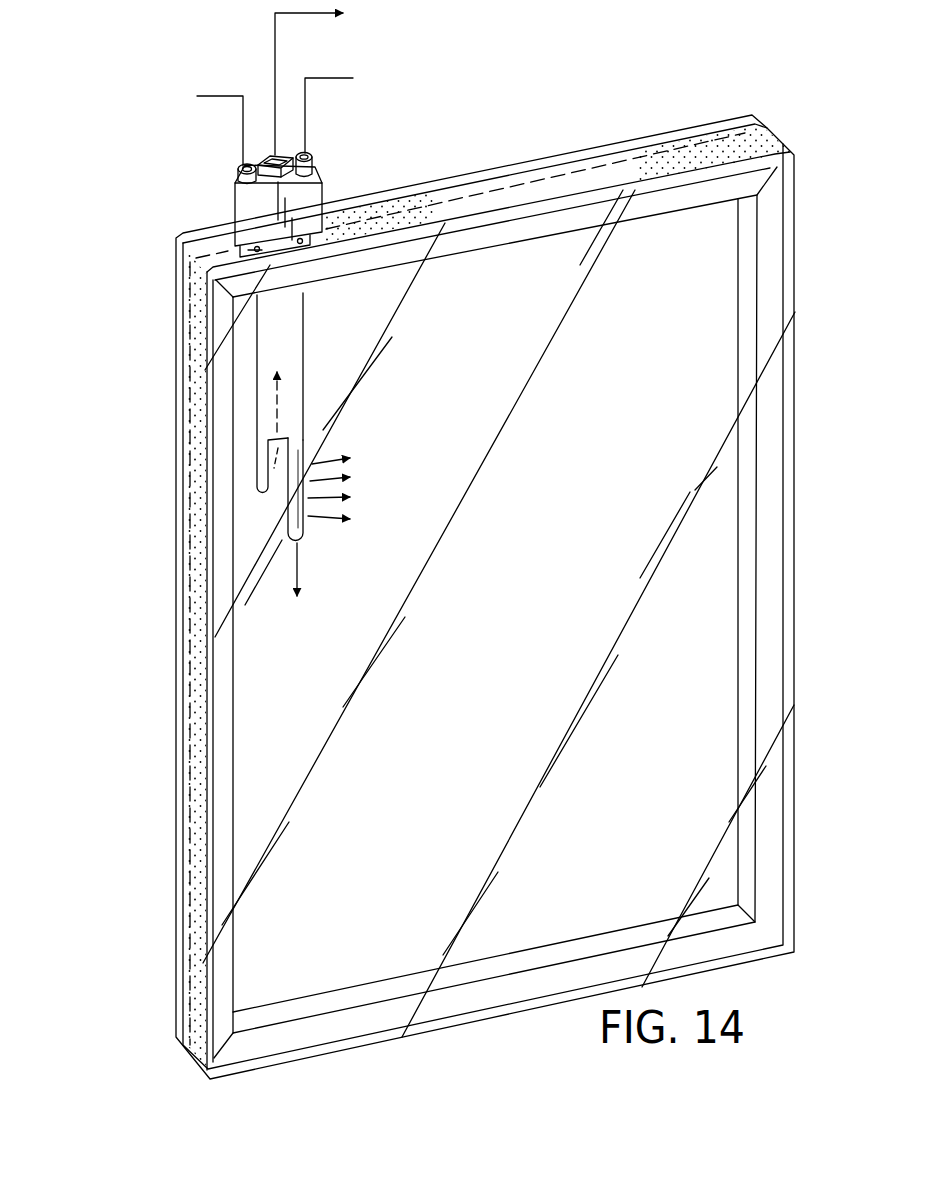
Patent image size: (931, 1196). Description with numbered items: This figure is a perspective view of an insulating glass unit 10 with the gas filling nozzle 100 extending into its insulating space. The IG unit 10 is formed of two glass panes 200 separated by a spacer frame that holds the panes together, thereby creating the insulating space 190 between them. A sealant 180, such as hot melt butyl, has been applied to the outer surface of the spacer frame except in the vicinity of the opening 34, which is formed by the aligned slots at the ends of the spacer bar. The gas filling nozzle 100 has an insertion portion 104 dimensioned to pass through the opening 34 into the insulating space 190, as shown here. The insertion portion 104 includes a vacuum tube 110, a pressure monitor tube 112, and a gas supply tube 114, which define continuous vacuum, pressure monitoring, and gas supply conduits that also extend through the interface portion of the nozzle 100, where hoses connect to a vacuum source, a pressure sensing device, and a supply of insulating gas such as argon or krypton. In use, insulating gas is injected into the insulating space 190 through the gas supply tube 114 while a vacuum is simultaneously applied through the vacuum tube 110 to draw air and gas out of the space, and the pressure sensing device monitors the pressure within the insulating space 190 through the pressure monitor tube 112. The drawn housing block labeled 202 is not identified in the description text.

The IG unit 10 is at (110, 283).
The opening 34 is at (284, 244).
The gas filling nozzle 100 is at (283, 130).
The insertion portion 104 is at (256, 403).
The vacuum tube 110 is at (268, 157).
The pressure monitor tube 112 is at (266, 472).
The gas supply tube 114 is at (300, 524).
The sealant 180 is at (714, 156).
The insulating space 190 is at (690, 355).
The glass panes 200 is at (570, 203).
The housing block 202 is at (232, 207).